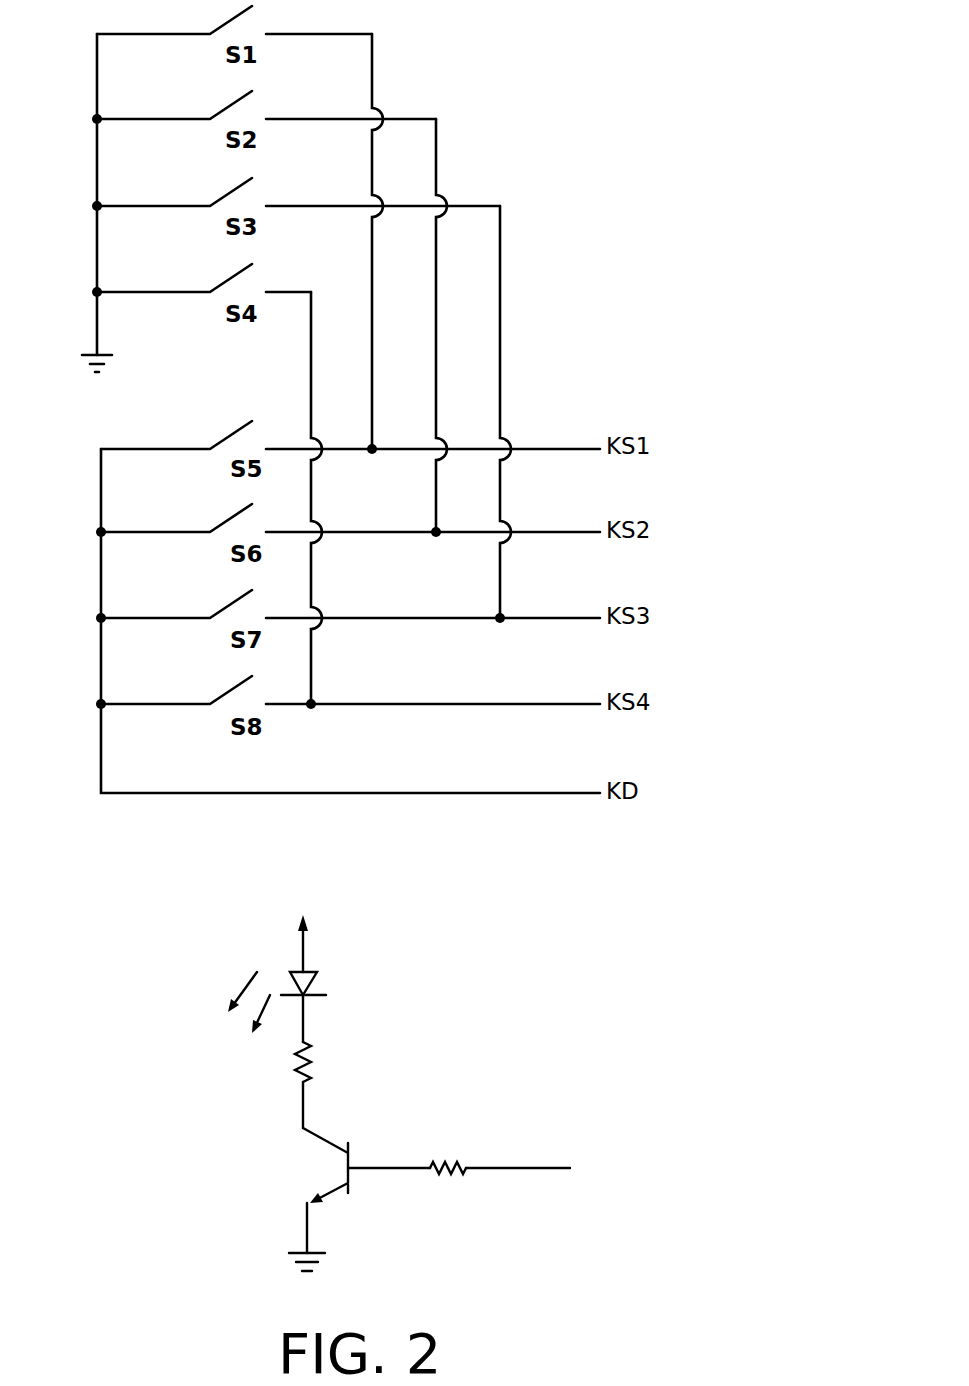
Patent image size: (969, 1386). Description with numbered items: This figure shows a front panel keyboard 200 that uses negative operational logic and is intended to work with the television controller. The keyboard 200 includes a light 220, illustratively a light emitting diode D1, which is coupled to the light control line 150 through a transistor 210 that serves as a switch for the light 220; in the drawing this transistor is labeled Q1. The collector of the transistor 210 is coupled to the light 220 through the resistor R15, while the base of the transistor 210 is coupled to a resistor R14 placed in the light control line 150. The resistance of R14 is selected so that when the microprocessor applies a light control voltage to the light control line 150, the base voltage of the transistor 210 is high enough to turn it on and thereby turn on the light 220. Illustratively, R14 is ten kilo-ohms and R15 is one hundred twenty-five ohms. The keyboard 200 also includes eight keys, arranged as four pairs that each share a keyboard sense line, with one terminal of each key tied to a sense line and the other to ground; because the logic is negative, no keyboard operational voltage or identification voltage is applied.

The front panel keyboard 200 is at (232, 1277).
The transistor 210 is at (322, 1196).
The light 220 is at (288, 970).
The light control line 150 is at (549, 1169).
The light emitting diode D1 is at (325, 984).
The resistor R15 is at (332, 1062).
The resistor R14 is at (448, 1202).
The transistor Q1 is at (302, 1165).